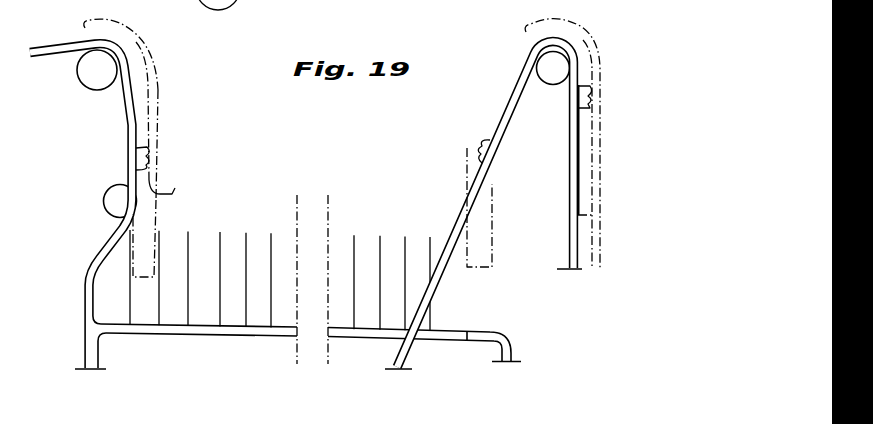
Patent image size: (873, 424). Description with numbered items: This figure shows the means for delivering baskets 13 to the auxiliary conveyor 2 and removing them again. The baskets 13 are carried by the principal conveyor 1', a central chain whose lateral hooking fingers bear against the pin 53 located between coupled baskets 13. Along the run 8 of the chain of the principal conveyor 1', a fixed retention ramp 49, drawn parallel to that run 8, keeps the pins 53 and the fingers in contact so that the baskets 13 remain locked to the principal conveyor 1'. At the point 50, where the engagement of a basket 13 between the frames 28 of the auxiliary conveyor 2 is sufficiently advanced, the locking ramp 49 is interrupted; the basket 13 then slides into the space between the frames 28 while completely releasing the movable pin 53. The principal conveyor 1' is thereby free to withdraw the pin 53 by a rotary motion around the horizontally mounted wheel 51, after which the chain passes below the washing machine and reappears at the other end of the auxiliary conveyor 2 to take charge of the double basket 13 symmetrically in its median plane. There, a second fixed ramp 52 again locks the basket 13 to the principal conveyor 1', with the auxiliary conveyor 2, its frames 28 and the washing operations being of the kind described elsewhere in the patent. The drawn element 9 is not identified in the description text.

The principal conveyor 1' is at (288, 180).
The auxiliary conveyor 2 is at (249, 329).
The run of the chain 8 is at (154, 121).
The inclined tubular member 9 is at (483, 205).
The basket 13 is at (158, 228).
The frames 28 is at (271, 234).
The retention ramp 49 is at (133, 33).
The interruption point of the locking ramp 50 is at (176, 192).
The horizontally mounted wheel 51 is at (110, 196).
The fixed ramp 52 is at (580, 29).
The pin 53 is at (151, 156).